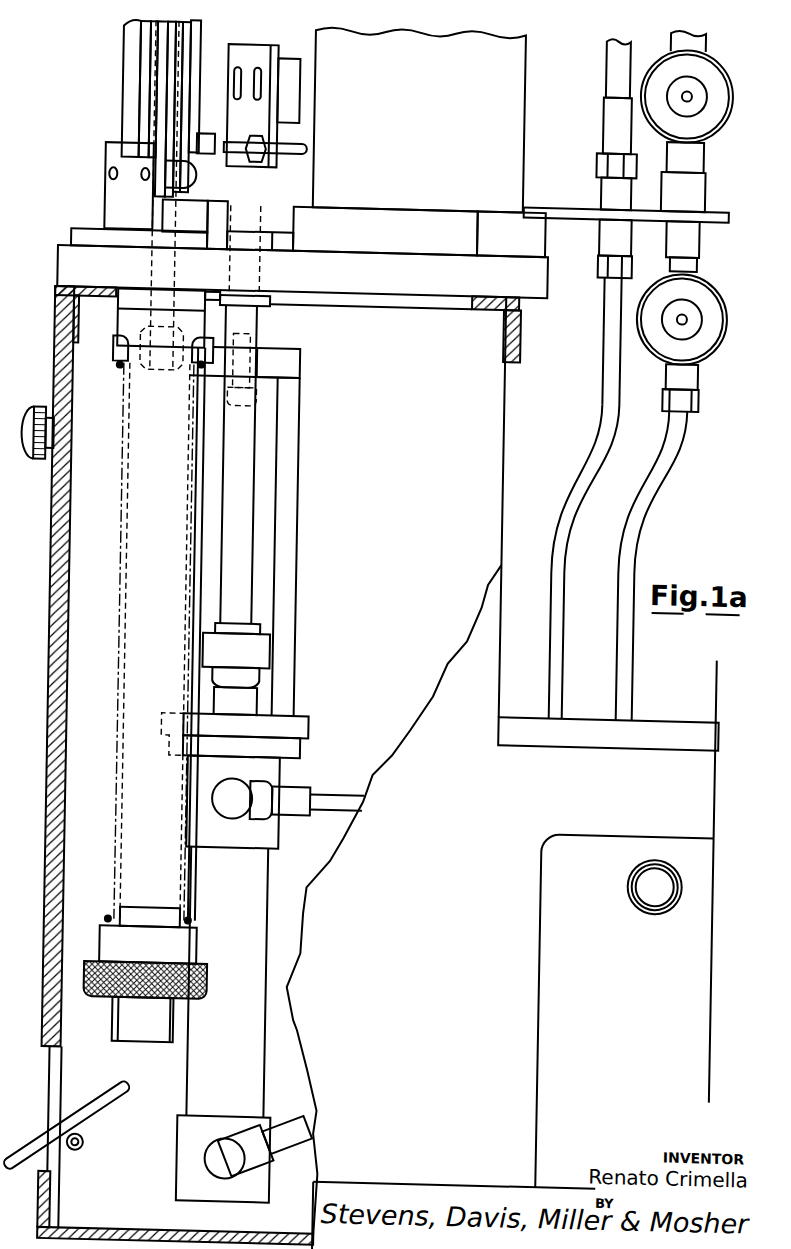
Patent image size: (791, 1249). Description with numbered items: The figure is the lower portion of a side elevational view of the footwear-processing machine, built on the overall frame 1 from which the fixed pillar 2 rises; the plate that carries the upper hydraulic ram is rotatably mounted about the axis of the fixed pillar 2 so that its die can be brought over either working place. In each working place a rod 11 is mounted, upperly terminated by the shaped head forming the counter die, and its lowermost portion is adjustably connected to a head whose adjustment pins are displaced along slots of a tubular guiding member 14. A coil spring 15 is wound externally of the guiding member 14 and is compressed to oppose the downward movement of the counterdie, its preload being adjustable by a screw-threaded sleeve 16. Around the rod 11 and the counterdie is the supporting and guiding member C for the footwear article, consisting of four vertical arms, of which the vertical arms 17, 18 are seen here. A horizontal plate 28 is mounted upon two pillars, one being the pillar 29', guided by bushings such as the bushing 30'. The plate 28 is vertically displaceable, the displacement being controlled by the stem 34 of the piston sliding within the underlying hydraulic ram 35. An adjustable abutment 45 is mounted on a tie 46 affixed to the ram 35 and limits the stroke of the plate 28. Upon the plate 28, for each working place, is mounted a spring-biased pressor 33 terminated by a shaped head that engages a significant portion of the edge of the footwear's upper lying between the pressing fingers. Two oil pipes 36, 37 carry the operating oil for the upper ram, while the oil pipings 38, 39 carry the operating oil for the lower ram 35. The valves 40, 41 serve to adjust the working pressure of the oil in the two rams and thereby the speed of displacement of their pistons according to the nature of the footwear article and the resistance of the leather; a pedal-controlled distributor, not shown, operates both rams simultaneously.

The overall frame 1 is at (68, 269).
The fixed pillar 2 is at (501, 115).
The rod 11 is at (147, 224).
The tubular guiding member 14 is at (144, 506).
The coil spring 15 is at (124, 371).
The screw-threaded sleeve 16 is at (116, 1004).
The vertical arm 17 is at (132, 44).
The vertical arm 18 is at (188, 46).
The supporting and guiding member C is at (152, 104).
The horizontal plate 28 is at (280, 220).
The pillar 29' is at (286, 465).
The bushing 30' is at (265, 270).
The pressor 33 is at (204, 143).
The stem 34 is at (255, 704).
The hydraulic ram 35 is at (269, 878).
The oil pipe 36 is at (696, 33).
The oil pipe 37 is at (610, 64).
The oil piping 38 is at (681, 444).
The oil piping 39 is at (587, 488).
The valve 40 is at (705, 117).
The valve 41 is at (705, 335).
The adjustable abutment 45 is at (250, 403).
The tie 46 is at (293, 360).